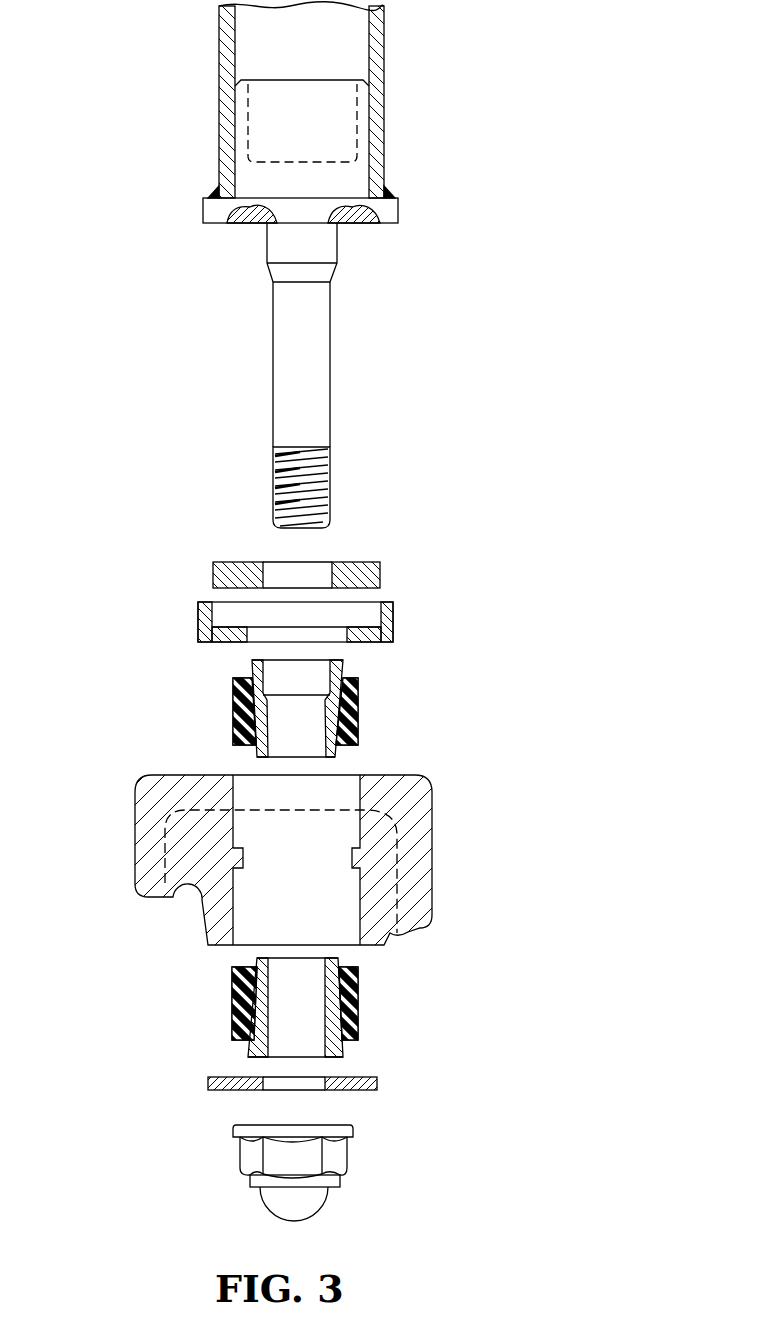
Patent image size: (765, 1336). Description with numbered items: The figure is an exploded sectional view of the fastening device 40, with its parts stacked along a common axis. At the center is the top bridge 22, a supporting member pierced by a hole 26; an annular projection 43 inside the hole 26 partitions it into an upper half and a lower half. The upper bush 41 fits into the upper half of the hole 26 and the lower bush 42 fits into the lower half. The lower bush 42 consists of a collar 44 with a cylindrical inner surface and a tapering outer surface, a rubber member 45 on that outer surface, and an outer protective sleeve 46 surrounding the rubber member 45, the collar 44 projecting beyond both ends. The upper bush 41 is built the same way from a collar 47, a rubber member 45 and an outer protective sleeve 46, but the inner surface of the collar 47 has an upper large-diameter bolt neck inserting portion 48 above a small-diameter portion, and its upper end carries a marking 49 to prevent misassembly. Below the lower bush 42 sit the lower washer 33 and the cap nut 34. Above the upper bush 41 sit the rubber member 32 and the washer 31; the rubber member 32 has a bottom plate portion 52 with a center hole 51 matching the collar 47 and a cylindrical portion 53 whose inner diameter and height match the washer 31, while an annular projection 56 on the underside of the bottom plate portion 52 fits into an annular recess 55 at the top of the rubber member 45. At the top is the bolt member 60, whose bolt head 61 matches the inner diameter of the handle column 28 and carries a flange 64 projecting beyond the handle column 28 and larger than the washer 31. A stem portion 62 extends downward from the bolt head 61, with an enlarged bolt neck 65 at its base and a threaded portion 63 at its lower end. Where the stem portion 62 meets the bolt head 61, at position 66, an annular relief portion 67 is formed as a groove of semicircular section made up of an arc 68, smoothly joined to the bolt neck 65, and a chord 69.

The top bridge 22 is at (329, 834).
The hole 26 is at (233, 800).
The handle column 28 is at (358, 100).
The washer 31 is at (213, 575).
The rubber member 32 is at (282, 617).
The lower washer 33 is at (208, 1083).
The cap nut 34 is at (238, 1167).
The fastening device 40 is at (550, 491).
The upper bush 41 is at (281, 694).
The lower bush 42 is at (270, 1020).
The annular projection 43 is at (243, 855).
The collar 44 is at (338, 1055).
The rubber member 45 is at (343, 740).
The outer protective sleeve 46 is at (362, 715).
The collar 47 is at (345, 668).
The bolt neck inserting portion 48 is at (328, 683).
The marking 49 is at (343, 658).
The center hole 51 is at (343, 637).
The bottom plate portion 52 is at (353, 642).
The cylindrical portion 53 is at (393, 623).
The annular recess 55 is at (252, 662).
The annular projection 56 is at (235, 645).
The bolt member 60 is at (276, 357).
The bolt head 61 is at (355, 168).
The stem portion 62 is at (317, 360).
The threaded portion 63 is at (330, 470).
The flange 64 is at (396, 208).
The bolt neck 65 is at (328, 247).
The position 66 is at (266, 223).
The relief portion 67 is at (245, 254).
The arc 68 is at (254, 225).
The chord 69 is at (260, 227).